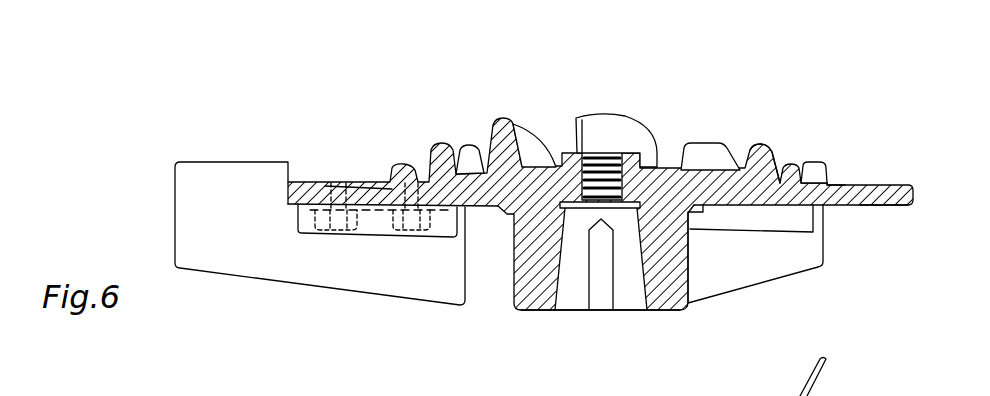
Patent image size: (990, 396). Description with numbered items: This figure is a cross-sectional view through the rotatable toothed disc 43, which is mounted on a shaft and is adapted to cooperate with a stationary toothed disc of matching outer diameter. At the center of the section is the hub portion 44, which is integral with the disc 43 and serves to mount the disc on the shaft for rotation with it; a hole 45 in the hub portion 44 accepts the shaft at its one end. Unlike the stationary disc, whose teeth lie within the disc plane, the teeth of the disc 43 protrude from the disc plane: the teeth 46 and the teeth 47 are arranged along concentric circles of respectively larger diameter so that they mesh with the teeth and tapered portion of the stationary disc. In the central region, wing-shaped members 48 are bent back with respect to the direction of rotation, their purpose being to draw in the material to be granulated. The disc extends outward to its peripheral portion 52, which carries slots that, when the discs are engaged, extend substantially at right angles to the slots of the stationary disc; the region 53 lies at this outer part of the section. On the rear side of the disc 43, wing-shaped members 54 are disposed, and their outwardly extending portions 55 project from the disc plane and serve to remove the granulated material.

The rotatable toothed disc 43 is at (838, 176).
The hub portion 44 is at (673, 293).
The hole 45 is at (622, 300).
The teeth 46 is at (767, 147).
The teeth 47 is at (803, 170).
The wing-shaped members 48 is at (623, 135).
The peripheral portion 52 is at (883, 185).
The plate end 53 is at (863, 207).
The wing-shaped members 54 is at (365, 277).
The outwardly extending portions 55 is at (225, 175).